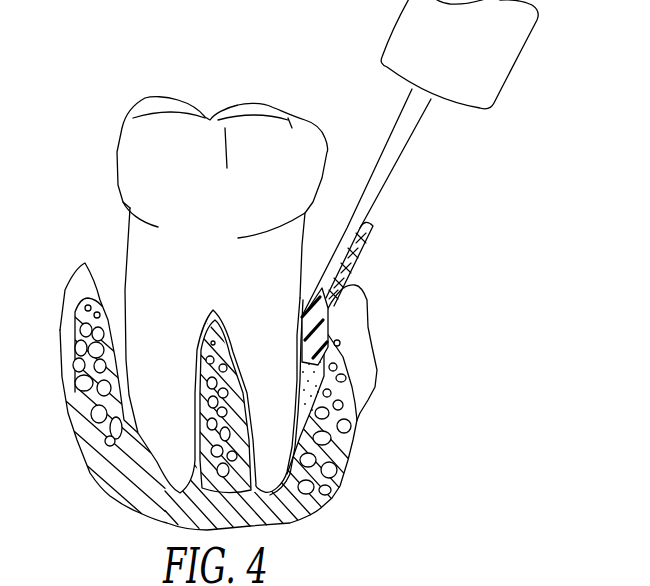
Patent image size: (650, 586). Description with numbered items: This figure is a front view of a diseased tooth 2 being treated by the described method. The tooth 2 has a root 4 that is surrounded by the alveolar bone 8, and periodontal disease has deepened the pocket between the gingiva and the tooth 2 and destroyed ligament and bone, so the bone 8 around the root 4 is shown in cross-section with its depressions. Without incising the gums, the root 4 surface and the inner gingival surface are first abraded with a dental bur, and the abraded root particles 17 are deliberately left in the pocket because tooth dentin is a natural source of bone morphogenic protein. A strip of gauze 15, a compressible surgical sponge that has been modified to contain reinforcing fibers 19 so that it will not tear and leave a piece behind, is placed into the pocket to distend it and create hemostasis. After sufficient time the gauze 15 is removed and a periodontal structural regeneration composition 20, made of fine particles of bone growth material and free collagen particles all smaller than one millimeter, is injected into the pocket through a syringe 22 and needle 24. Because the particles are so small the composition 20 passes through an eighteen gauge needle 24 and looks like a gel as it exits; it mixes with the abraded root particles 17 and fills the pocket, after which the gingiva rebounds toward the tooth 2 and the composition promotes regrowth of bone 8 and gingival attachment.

The tooth 2 is at (184, 296).
The root 4 is at (157, 442).
The alveolar bone 8 is at (340, 456).
The gauze 15 is at (372, 237).
The abraded root particles 17 is at (302, 388).
The reinforcing fibers 19 is at (352, 267).
The periodontal structural regeneration composition 20 is at (300, 317).
The syringe 22 is at (510, 72).
The needle 24 is at (403, 157).